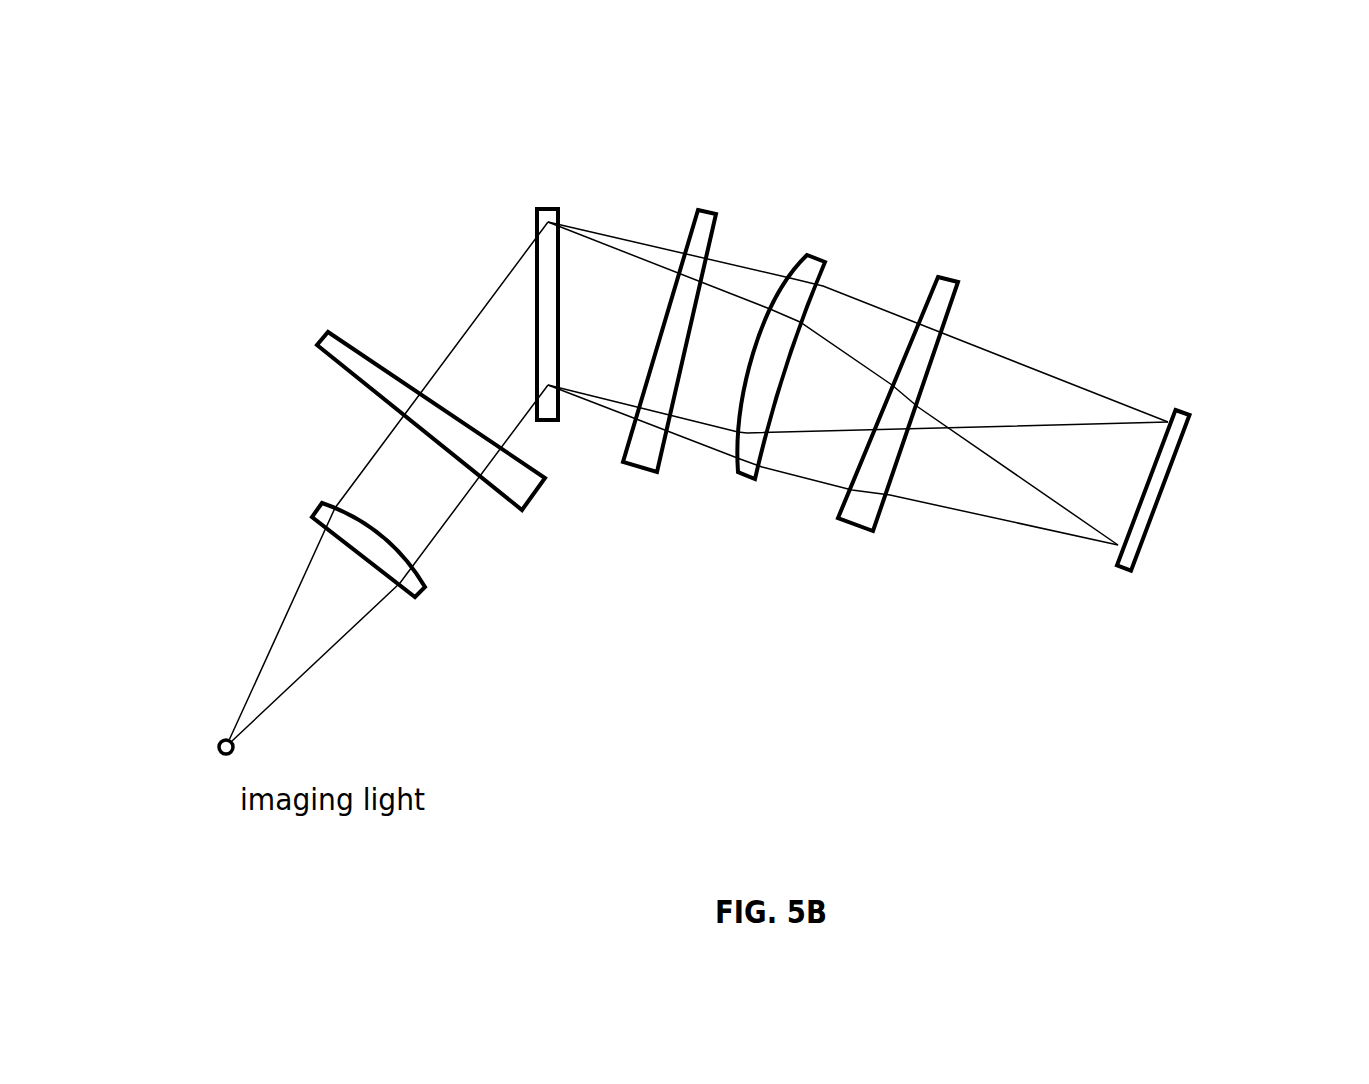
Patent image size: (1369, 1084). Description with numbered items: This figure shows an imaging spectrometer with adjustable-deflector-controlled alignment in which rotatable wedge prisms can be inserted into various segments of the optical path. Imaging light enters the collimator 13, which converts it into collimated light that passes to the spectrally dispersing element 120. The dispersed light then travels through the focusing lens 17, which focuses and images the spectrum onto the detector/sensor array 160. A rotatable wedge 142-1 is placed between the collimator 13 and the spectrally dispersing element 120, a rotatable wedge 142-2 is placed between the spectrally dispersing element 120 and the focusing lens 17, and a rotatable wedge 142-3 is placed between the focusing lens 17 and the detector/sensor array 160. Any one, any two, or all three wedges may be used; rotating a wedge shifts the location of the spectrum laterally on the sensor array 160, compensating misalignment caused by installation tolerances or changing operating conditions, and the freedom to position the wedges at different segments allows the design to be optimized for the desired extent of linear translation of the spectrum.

The collimator 13 is at (266, 527).
The rotatable wedge 142-1 is at (363, 380).
The spectrally dispersing element 120 is at (440, 257).
The rotatable wedge 142-2 is at (736, 295).
The focusing lens 17 is at (738, 417).
The rotatable wedge 142-3 is at (947, 364).
The detector/sensor array 160 is at (1173, 538).